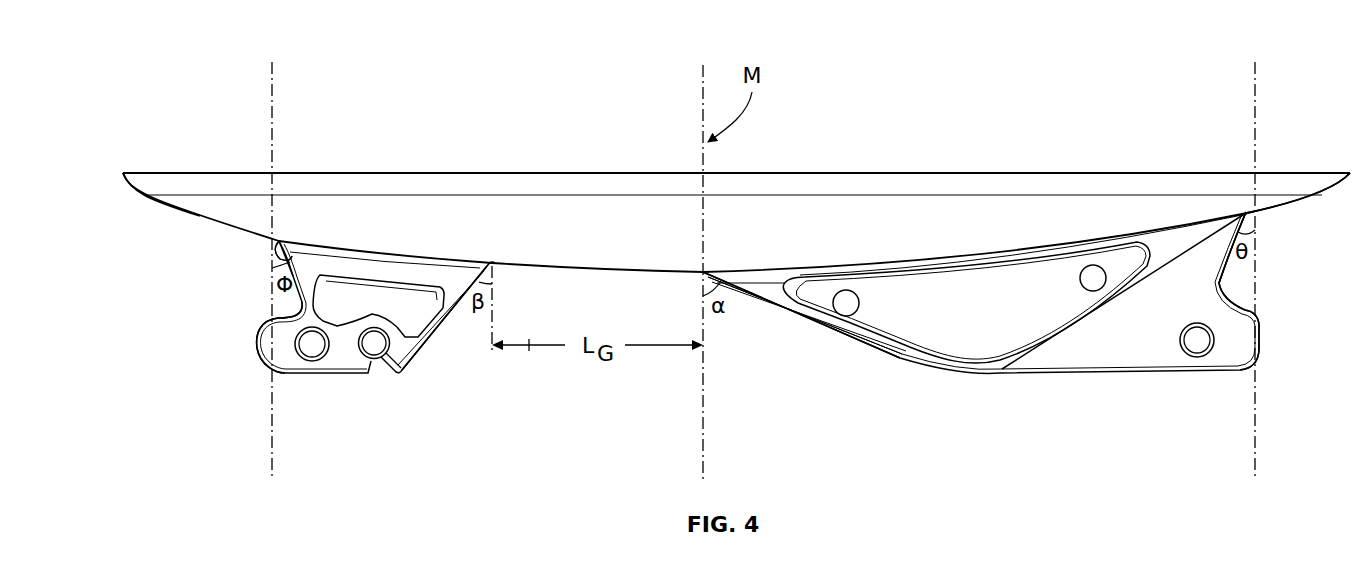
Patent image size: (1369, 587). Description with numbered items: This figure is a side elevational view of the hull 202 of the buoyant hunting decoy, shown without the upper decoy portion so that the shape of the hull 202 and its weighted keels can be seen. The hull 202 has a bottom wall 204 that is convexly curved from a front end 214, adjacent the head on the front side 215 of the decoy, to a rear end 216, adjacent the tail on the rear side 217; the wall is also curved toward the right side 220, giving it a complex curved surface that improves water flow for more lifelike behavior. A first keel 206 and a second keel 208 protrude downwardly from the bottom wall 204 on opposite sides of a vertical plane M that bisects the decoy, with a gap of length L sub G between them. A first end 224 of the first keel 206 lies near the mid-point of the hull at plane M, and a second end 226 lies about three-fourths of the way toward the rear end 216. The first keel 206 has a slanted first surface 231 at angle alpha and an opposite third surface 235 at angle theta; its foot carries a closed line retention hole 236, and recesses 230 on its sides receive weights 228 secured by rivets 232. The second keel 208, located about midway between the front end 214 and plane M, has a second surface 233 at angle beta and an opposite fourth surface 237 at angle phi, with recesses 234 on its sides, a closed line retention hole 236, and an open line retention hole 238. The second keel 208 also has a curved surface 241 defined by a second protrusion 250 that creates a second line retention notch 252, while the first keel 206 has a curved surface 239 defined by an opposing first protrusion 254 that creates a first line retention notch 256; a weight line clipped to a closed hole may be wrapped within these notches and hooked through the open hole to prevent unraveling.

The hull 202 is at (208, 129).
The bottom wall 204 is at (543, 218).
The first keel 206 is at (1128, 347).
The second keel 208 is at (287, 362).
The front end 214 is at (128, 184).
The front side 215 is at (481, 79).
The rear end 216 is at (1348, 180).
The rear side 217 is at (1002, 99).
The right side 220 is at (452, 190).
The first end 224 is at (773, 292).
The second end 226 is at (1214, 258).
The weights 228 is at (960, 338).
The recesses 230 is at (811, 316).
The first surface 231 is at (832, 348).
The rivets 232 is at (846, 302).
The second surface 233 is at (420, 317).
The recesses 234 is at (438, 333).
The third surface 235 is at (1217, 285).
The closed line retention hole 236 is at (306, 340).
The fourth surface 237 is at (281, 239).
The open line retention hole 238 is at (377, 349).
The curved surface 239 is at (1264, 322).
The curved surface 241 is at (258, 355).
The second protrusion 250 is at (268, 347).
The second line retention notch 252 is at (268, 271).
The first protrusion 254 is at (1233, 353).
The first line retention notch 256 is at (1266, 296).